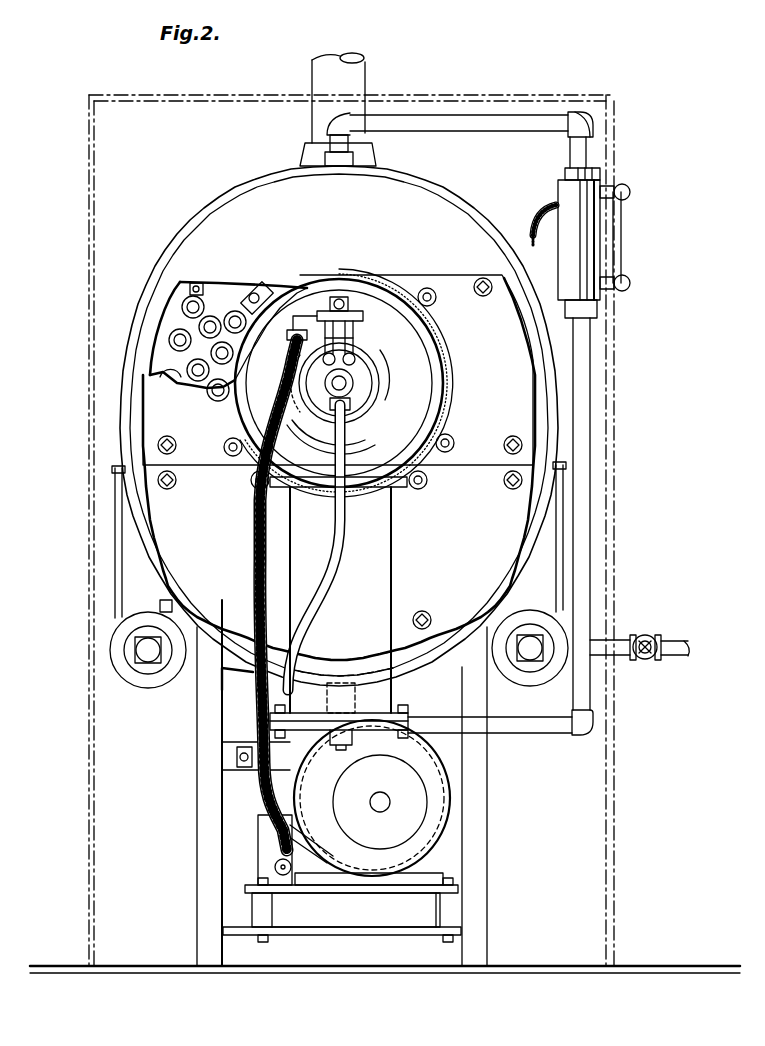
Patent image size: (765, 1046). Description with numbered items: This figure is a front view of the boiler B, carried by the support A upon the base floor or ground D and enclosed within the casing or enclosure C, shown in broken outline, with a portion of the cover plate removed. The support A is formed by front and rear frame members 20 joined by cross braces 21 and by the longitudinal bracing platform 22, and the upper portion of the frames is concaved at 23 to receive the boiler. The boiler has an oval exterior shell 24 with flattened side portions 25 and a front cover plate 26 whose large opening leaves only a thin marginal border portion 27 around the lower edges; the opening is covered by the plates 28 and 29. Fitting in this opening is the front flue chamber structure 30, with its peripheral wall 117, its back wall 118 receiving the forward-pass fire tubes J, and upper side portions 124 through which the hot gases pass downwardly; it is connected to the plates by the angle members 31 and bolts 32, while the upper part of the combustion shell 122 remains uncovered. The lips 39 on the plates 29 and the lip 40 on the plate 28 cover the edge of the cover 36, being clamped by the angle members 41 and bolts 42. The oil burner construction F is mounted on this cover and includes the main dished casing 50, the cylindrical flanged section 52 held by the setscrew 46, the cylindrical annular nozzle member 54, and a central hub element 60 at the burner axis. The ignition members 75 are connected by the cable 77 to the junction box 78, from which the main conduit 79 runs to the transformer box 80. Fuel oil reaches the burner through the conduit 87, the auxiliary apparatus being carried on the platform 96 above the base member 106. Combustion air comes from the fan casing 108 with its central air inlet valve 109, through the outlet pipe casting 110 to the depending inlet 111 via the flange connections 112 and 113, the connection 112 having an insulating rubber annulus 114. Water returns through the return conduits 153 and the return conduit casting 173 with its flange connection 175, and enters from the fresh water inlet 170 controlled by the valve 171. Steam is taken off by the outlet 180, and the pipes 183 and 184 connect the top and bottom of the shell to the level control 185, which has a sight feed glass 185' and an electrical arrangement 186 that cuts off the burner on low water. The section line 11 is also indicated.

The frame members 20 is at (343, 783).
The cross braces 21 is at (201, 762).
The longitudinal bracing platform 22 is at (342, 940).
The concaved portion 23 is at (484, 685).
The exterior shell 24 is at (339, 414).
The flattened side portions 25 is at (81, 381).
The front cover plate 26 is at (339, 412).
The marginal border portion 27 is at (394, 500).
The plate 28 is at (327, 541).
The plate 29 is at (291, 342).
The front flue chamber structure 30 is at (200, 264).
The angle members 31 is at (249, 282).
The bolts 32 is at (342, 453).
The cover 36 is at (317, 264).
The lips 39 is at (351, 357).
The lip 40 is at (345, 486).
The angle members 41 is at (280, 278).
The bolts 42 is at (342, 375).
The setscrew 46 is at (370, 354).
The main dished casing 50 is at (339, 357).
The cylindrical flanged section 52 is at (358, 383).
The cylindrical annular nozzle member 54 is at (314, 421).
The shaft 60 is at (407, 389).
The ignition members 75 is at (369, 347).
The cable 77 is at (367, 333).
The junction box 78 is at (350, 270).
The main conduit 79 is at (226, 595).
The transformer box 80 is at (279, 850).
The conduit 87 is at (322, 547).
The platform 96 is at (351, 899).
The base box 106 is at (350, 910).
The casing 108 is at (421, 802).
The central air inlet valve 109 is at (437, 802).
The outlet pipe casting 110 is at (358, 595).
The depending inlet 111 is at (368, 443).
The flange connection 112 is at (360, 715).
The flange connection 113 is at (376, 527).
The insulating rubber annulus 114 is at (363, 708).
The peripheral wall 117 is at (271, 259).
The back wall 118 is at (210, 333).
The upper part of combustion shell 122 is at (350, 269).
The upper side portions 124 is at (100, 346).
The return conduits 153 is at (356, 629).
The fresh water inlet 170 is at (693, 628).
The valve 171 is at (639, 624).
The return conduit casting 173 is at (358, 568).
The flange connection 175 is at (360, 514).
The outlet 180 is at (360, 106).
The pipe 183 is at (471, 107).
The pipe 184 is at (500, 738).
The level control 185 is at (619, 243).
The sight feed glass 185' is at (646, 237).
The electrical arrangement 186 is at (537, 193).
The section line 11 is at (355, 372).
The support A is at (516, 845).
The boiler B is at (483, 183).
The casing or enclosure C is at (340, 530).
The base floor or ground D is at (470, 989).
The oil burner construction F is at (310, 490).
The forward-pass fire tubes J is at (264, 248).